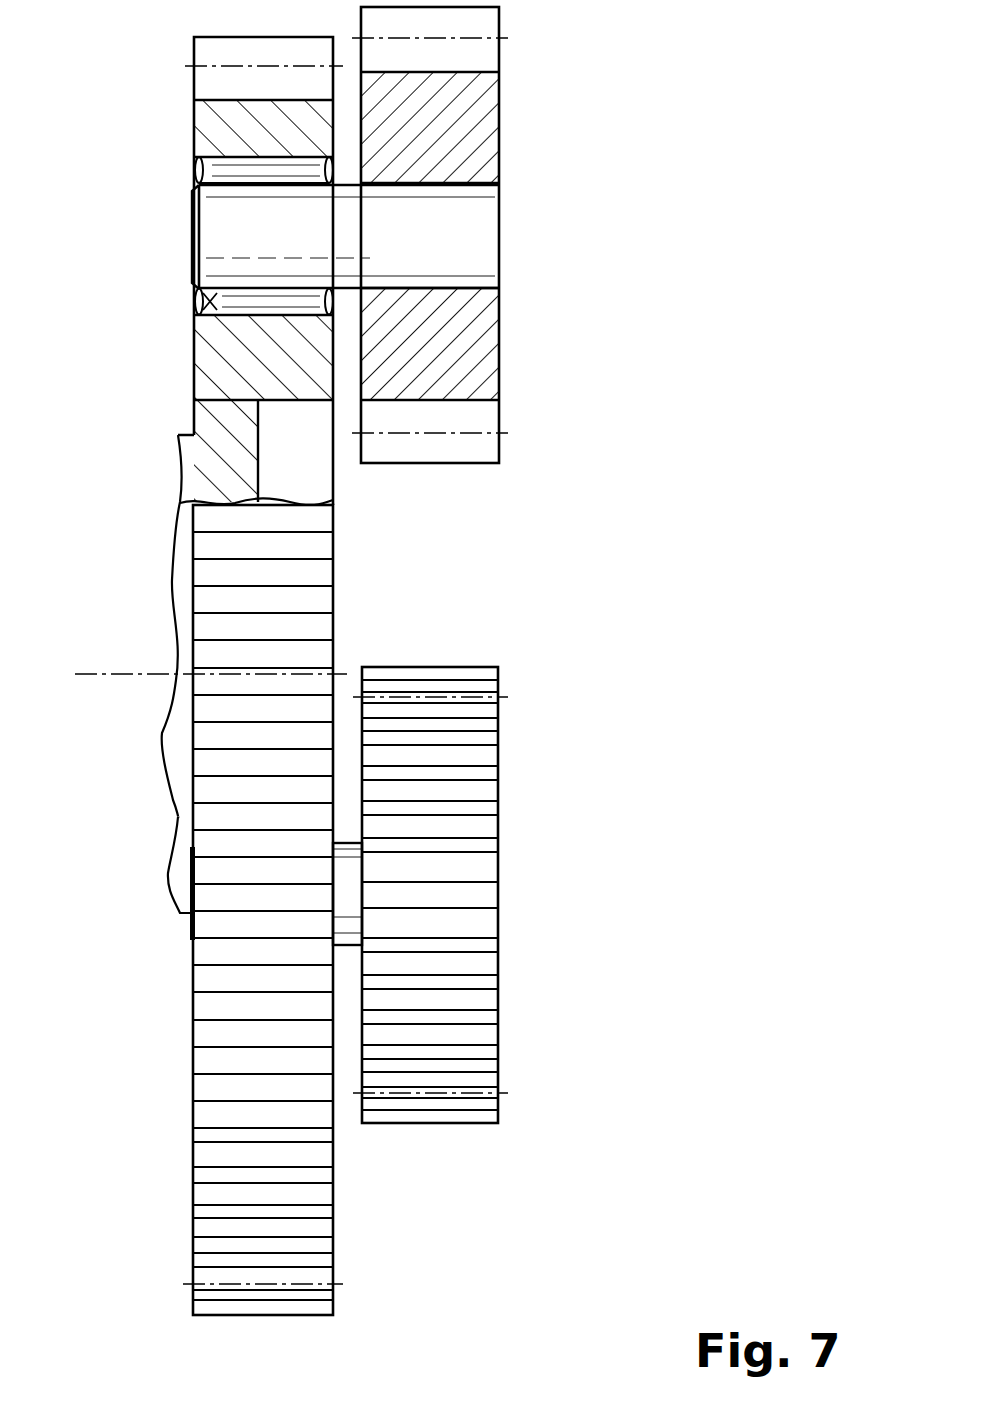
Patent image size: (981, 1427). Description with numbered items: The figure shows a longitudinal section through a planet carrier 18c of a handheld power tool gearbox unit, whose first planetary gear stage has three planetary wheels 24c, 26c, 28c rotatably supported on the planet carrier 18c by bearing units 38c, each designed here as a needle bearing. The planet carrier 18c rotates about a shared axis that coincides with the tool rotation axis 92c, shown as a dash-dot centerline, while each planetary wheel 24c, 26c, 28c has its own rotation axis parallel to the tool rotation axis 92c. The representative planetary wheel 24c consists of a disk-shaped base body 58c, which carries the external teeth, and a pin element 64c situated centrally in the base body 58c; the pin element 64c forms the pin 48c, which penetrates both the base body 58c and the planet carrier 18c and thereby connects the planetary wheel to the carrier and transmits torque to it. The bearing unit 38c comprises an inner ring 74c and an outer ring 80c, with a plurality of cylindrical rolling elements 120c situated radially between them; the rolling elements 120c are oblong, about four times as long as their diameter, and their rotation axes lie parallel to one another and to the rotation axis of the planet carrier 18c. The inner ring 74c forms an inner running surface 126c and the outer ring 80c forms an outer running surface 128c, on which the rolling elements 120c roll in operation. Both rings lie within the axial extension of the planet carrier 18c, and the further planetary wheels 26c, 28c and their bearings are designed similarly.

The bearing unit 38c is at (170, 106).
The outer ring 80c is at (216, 147).
The rolling elements 120c is at (213, 167).
The inner ring 74c is at (216, 187).
The pin 48c is at (413, 236).
The pin element 64c is at (467, 243).
The inner running surface 126c is at (203, 297).
The outer running surface 128c is at (207, 305).
The base body 58c is at (486, 374).
The planetary wheel 24c is at (578, 213).
The planet carrier 18c is at (208, 1245).
The tool rotation axis 92c is at (77, 673).
The planetary wheel 26c is at (578, 873).
The planetary wheel 28c is at (578, 905).